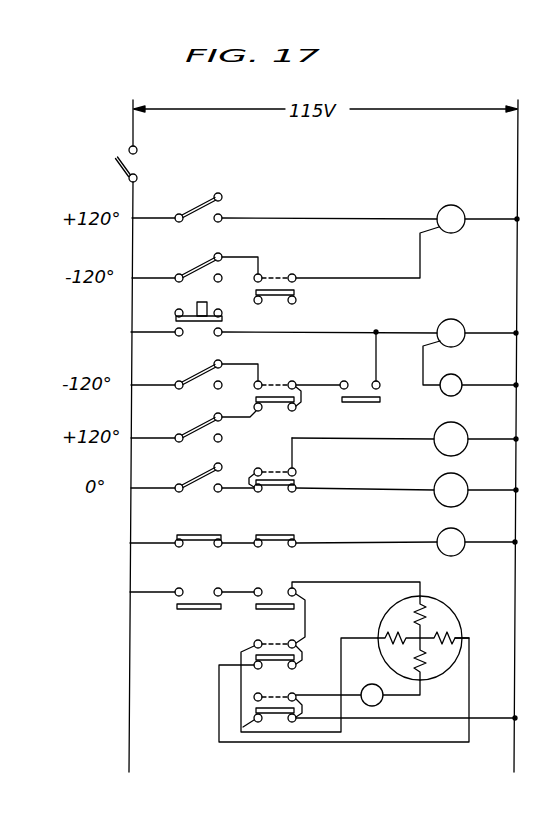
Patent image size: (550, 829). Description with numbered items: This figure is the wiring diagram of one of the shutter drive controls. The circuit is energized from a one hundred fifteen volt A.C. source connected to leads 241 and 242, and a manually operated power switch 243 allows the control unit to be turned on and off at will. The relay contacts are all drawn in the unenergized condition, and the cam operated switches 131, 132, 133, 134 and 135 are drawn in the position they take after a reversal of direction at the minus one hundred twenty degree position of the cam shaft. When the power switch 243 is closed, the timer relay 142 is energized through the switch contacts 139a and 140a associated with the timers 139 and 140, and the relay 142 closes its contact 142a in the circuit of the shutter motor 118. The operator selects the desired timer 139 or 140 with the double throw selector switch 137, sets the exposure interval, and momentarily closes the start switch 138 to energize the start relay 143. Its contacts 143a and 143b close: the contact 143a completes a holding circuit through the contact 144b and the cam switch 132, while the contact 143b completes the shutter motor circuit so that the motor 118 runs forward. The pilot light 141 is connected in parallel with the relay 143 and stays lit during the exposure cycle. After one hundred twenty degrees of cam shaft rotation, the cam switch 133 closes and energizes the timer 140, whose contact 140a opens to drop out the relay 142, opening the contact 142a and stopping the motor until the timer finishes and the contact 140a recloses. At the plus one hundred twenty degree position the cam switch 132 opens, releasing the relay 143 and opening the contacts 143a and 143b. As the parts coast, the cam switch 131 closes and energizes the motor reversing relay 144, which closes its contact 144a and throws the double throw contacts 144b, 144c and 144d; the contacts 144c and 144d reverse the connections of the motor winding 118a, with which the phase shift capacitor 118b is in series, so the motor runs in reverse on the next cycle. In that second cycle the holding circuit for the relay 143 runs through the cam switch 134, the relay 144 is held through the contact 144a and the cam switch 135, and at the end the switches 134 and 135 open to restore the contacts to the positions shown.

The lead 241 is at (134, 140).
The lead 242 is at (517, 132).
The power switch 243 is at (117, 158).
The cam switch 131 is at (208, 203).
The cam switch 135 is at (207, 268).
The start switch 138 is at (197, 306).
The cam switch 134 is at (200, 376).
The cam switch 132 is at (200, 428).
The cam switch 133 is at (204, 480).
The double throw selector switch 137 is at (270, 486).
The timer 139 is at (457, 432).
The timer 140 is at (468, 468).
The pilot light 141 is at (456, 380).
The timer relay 142 is at (457, 534).
The start relay 143 is at (453, 323).
The motor reversing relay 144 is at (452, 210).
The switch contact 139a is at (190, 534).
The switch contact 140a is at (283, 534).
The contact 142a is at (266, 603).
The contact 143a is at (352, 404).
The contact 143b is at (205, 580).
The contact 144a is at (283, 297).
The double throw contacts 144b is at (275, 404).
The contacts 144c is at (278, 662).
The contacts 144d is at (278, 715).
The shutter motor 118 is at (441, 620).
The motor winding 118a is at (430, 604).
The phase shift capacitor 118b is at (380, 704).